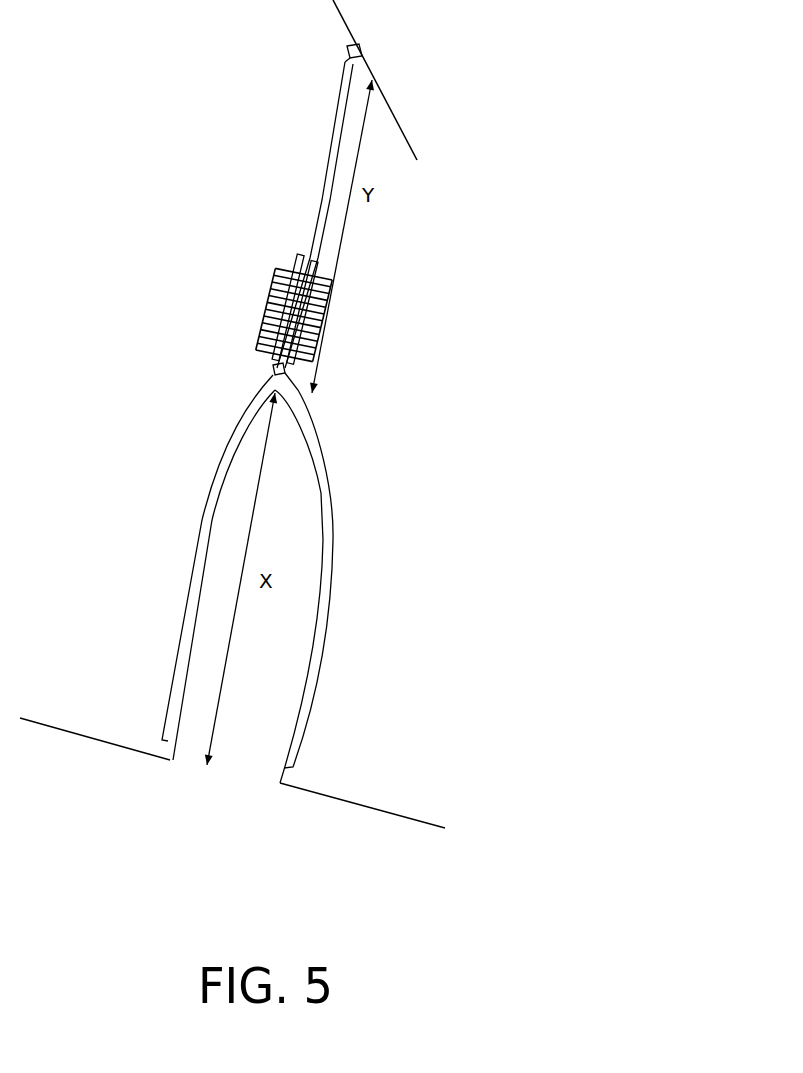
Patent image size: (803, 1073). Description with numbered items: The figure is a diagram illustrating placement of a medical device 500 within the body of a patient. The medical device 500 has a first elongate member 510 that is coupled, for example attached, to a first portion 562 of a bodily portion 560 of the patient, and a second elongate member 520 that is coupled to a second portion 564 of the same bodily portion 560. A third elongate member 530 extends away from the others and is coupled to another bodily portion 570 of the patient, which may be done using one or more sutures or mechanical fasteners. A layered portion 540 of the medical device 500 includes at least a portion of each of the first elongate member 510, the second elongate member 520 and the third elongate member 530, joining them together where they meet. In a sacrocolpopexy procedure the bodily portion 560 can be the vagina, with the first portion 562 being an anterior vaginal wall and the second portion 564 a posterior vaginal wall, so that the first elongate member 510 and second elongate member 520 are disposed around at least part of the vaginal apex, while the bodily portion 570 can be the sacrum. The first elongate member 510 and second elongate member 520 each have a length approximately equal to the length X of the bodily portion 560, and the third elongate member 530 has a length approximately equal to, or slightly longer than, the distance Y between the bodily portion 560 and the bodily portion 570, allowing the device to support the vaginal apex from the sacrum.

The medical device 500 is at (205, 242).
The first elongate member 510 is at (198, 553).
The second elongate member 520 is at (315, 650).
The third elongate member 530 is at (335, 156).
The layered portion 540 is at (248, 330).
The bodily portion 560 is at (234, 764).
The first portion 562 is at (228, 456).
The second portion 564 is at (326, 505).
The bodily portion 570 is at (385, 95).